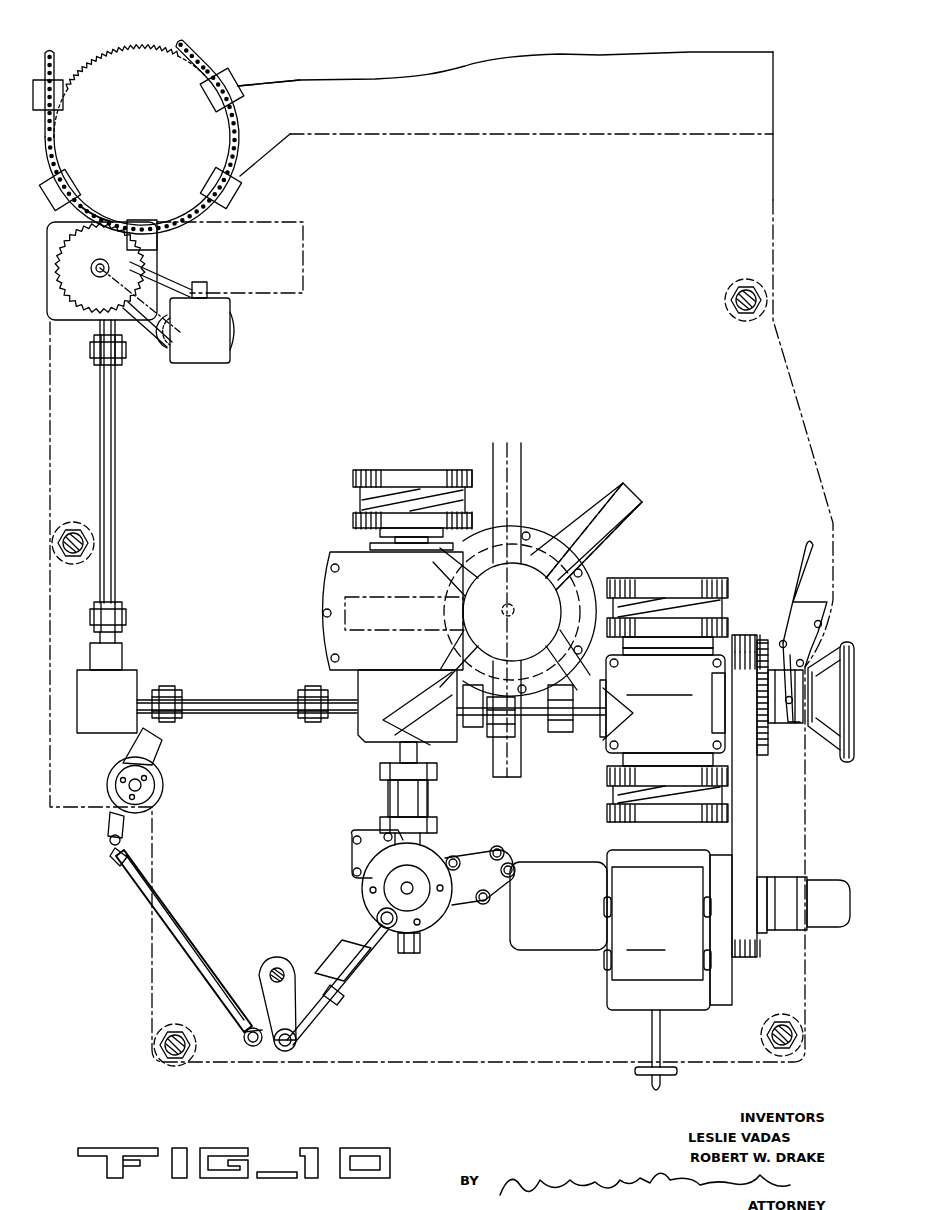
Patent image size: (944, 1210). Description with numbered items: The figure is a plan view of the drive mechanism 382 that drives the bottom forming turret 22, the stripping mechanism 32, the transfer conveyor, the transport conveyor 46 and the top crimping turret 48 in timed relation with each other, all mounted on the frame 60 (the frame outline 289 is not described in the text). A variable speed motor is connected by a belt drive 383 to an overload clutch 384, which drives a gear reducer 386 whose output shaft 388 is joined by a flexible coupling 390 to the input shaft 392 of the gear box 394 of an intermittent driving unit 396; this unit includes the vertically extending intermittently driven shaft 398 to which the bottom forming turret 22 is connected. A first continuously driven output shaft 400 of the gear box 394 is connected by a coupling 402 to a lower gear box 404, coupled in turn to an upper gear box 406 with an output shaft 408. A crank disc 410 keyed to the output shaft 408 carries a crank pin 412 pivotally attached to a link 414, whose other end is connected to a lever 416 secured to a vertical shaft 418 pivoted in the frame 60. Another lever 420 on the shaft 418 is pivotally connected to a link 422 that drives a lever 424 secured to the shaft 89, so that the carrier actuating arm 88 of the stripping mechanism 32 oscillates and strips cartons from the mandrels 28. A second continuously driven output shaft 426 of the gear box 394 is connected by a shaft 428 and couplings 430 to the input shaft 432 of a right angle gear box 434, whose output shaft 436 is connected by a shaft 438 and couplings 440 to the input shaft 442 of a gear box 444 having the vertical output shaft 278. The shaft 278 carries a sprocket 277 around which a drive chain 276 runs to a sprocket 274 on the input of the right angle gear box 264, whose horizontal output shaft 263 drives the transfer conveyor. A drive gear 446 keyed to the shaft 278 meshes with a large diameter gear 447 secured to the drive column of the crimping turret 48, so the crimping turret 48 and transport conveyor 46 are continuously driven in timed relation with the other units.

The transport conveyor 46 is at (50, 57).
The top crimping turret 48 is at (180, 78).
The frame outline 289 is at (452, 72).
The drive mechanism 382 is at (630, 112).
The frame 60 is at (566, 137).
The large diameter gear 447 is at (113, 217).
The drive gear 446 is at (120, 227).
The vertical shaft 278 is at (78, 273).
The gear box 444 is at (153, 253).
The sprocket 277 is at (157, 262).
The horizontal output shaft 263 is at (200, 287).
The right angle gear box 264 is at (230, 358).
The sprocket 274 is at (168, 345).
The drive chain 276 is at (149, 345).
The input shaft 442 is at (100, 338).
The couplings 440 is at (115, 395).
The shaft 438 is at (110, 455).
The output shaft 436 is at (118, 640).
The input shaft 432 is at (146, 697).
The couplings 430 is at (171, 692).
The shaft 428 is at (268, 712).
The right angle gear box 434 is at (88, 722).
The stripping mechanism 32 is at (165, 747).
The carrier actuating arm 88 is at (153, 758).
The shaft 89 is at (140, 790).
The lever 424 is at (112, 835).
The link 422 is at (158, 900).
The lever 420 is at (251, 1012).
The vertical shaft 418 is at (281, 966).
The lever 416 is at (285, 1050).
The crank disc 410 is at (372, 863).
The lower gear box 404 is at (363, 915).
The output shaft 408 is at (413, 885).
The upper gear box 406 is at (420, 940).
The crank pin 412 is at (390, 928).
The link 414 is at (343, 982).
The intermittent driving unit 396 is at (336, 580).
The intermittently driven shaft 398 is at (540, 588).
The gear box 394 is at (381, 680).
The mandrels 28 is at (524, 457).
The bottom forming turret 22 is at (642, 484).
The gear reducer 386 is at (701, 767).
The overload clutch 384 is at (770, 703).
The input shaft 392 is at (480, 722).
The first continuously driven output shaft 400 is at (400, 750).
The output shaft 388 is at (598, 705).
The flexible coupling 390 is at (543, 727).
The coupling 402 is at (400, 793).
The belt drive 383 is at (733, 875).
The second continuously driven output shaft 426 is at (315, 722).